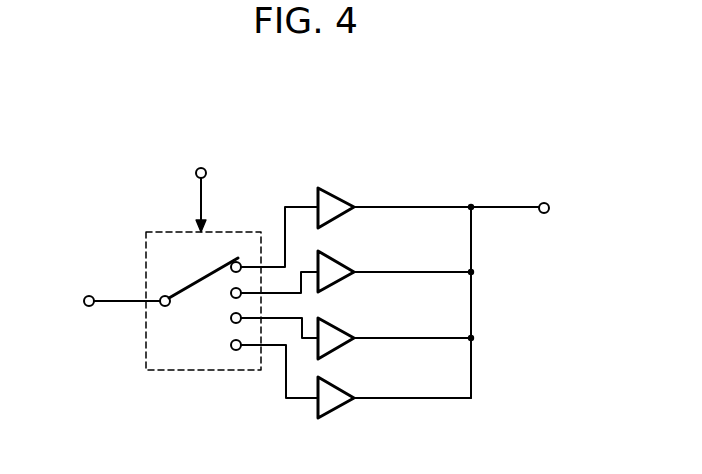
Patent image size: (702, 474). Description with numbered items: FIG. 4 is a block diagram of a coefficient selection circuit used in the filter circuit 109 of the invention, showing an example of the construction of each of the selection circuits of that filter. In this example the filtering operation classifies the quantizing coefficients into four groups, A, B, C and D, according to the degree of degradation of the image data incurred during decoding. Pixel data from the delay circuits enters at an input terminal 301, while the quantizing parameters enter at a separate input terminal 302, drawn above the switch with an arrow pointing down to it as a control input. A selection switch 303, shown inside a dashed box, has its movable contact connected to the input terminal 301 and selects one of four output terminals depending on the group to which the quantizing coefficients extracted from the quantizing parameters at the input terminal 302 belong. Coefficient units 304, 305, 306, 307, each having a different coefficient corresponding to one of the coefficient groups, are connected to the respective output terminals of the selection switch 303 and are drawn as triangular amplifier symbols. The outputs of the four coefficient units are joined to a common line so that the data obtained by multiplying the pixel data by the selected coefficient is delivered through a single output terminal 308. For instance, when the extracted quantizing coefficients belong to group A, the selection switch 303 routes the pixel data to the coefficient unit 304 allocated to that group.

The filter circuit 109 is at (297, 116).
The input terminal 301 is at (89, 307).
The input terminal 302 is at (195, 176).
The selection switch 303 is at (200, 370).
The coefficient unit 304 is at (340, 196).
The coefficient unit 305 is at (340, 260).
The coefficient unit 306 is at (340, 326).
The coefficient unit 307 is at (340, 386).
The output terminal 308 is at (544, 213).